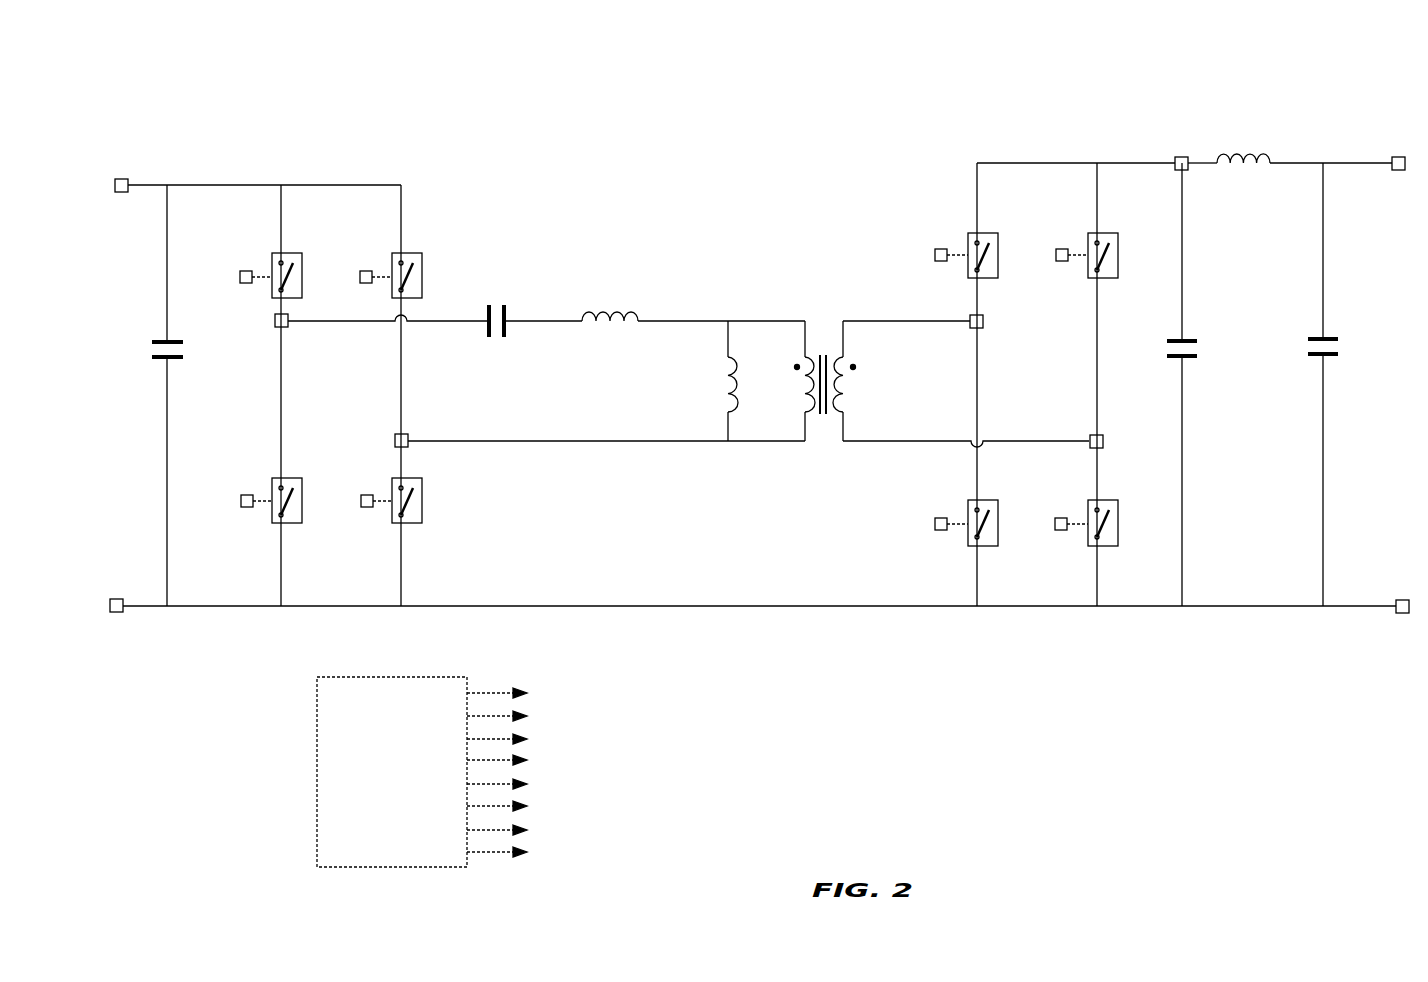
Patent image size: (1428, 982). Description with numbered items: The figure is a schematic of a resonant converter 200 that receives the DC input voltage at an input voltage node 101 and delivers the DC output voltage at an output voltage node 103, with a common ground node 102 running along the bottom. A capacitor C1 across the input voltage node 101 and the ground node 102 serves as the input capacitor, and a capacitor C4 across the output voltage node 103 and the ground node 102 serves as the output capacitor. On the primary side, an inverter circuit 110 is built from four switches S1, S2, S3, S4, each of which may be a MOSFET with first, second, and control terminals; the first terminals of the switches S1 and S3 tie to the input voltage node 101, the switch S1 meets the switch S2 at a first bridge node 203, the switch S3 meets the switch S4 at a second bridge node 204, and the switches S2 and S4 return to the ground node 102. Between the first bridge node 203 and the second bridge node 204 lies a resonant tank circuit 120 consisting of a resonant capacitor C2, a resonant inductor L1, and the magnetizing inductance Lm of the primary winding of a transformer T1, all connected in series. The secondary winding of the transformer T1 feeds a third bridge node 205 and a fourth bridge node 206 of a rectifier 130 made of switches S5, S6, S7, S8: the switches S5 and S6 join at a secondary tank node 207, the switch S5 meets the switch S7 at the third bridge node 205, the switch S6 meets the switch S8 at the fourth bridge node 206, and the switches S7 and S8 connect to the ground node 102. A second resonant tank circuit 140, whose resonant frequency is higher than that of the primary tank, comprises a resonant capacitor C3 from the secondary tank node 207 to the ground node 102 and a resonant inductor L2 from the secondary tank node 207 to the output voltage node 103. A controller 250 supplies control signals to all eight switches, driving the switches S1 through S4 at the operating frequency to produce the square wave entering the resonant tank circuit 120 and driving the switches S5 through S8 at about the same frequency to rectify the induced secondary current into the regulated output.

The resonant converter 200 is at (283, 107).
The inverter circuit 110 is at (435, 213).
The resonant tank circuit 120 is at (582, 260).
The rectifier 130 is at (900, 238).
The resonant tank circuit 140 is at (1240, 101).
The input voltage node 101 is at (120, 193).
The ground node 102 is at (116, 613).
The output voltage node 103 is at (1396, 173).
The first bridge node 203 is at (274, 320).
The second bridge node 204 is at (395, 438).
The third bridge node 205 is at (984, 321).
The fourth bridge node 206 is at (1104, 441).
The secondary tank node 207 is at (1179, 156).
The controller 250 is at (435, 772).
The capacitor C1 is at (151, 395).
The resonant capacitor C2 is at (497, 306).
The resonant capacitor C3 is at (1199, 384).
The capacitor C4 is at (1349, 384).
The resonant inductor L1 is at (610, 298).
The resonant inductor L2 is at (1243, 142).
The magnetizing inductance Lm is at (711, 381).
The transformer T1 is at (825, 367).
The switch S1 is at (268, 269).
The switch S2 is at (271, 492).
The switch S3 is at (388, 269).
The switch S4 is at (391, 492).
The switch S5 is at (966, 241).
The switch S6 is at (1087, 241).
The switch S7 is at (966, 510).
The switch S8 is at (1086, 510).